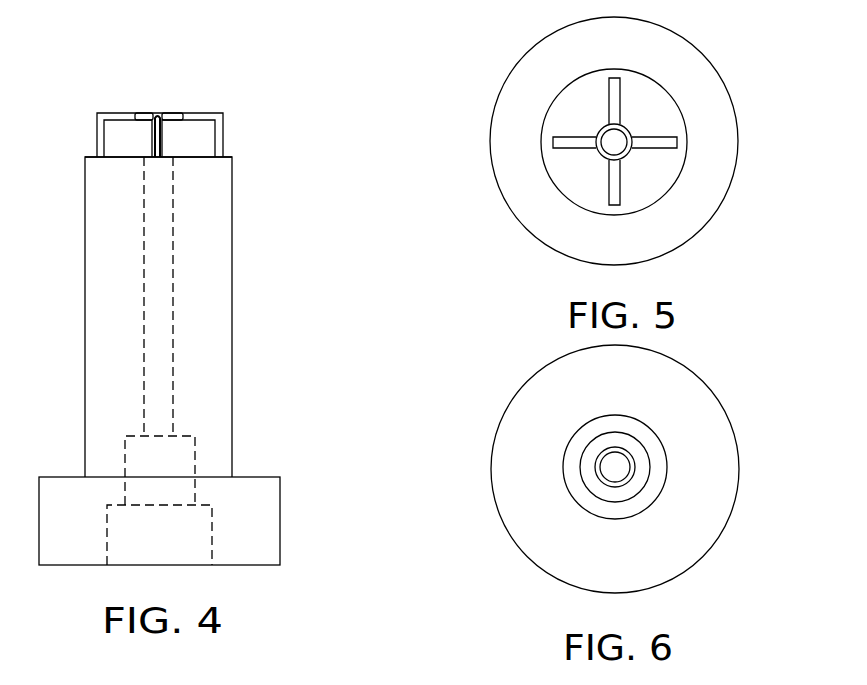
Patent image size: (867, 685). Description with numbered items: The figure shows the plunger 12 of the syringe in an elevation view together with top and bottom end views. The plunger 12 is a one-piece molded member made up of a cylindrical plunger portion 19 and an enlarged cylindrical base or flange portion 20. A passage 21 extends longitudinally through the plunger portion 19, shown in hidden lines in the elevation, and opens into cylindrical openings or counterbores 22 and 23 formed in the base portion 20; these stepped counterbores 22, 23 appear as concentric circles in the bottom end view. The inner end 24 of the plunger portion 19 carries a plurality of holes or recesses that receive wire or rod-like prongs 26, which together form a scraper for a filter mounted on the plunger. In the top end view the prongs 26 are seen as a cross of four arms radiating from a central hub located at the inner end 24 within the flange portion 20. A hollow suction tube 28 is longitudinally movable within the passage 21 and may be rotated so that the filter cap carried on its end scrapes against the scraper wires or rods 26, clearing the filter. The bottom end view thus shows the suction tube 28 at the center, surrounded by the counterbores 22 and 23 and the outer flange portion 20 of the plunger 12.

In FIG. 4, the plunger 12 is at (287, 505).
In FIG. 5, the plunger 12 is at (718, 221).
In FIG. 6, the plunger 12 is at (490, 483).
In FIG. 4, the cylindrical plunger portion 19 is at (90, 290).
In FIG. 5, the base or flange portion 20 is at (506, 153).
In FIG. 6, the base or flange portion 20 is at (525, 533).
In FIG. 4, the passage 21 is at (172, 273).
In FIG. 4, the counterbore 22 is at (128, 448).
In FIG. 6, the counterbore 22 is at (587, 478).
In FIG. 4, the counterbore 23 is at (212, 538).
In FIG. 6, the counterbore 23 is at (600, 513).
In FIG. 4, the inner end 24 is at (90, 157).
In FIG. 5, the inner end 24 is at (563, 186).
In FIG. 4, the prongs 26 is at (97, 113).
In FIG. 5, the prongs 26 is at (573, 137).
In FIG. 6, the suction tube 28 is at (610, 450).